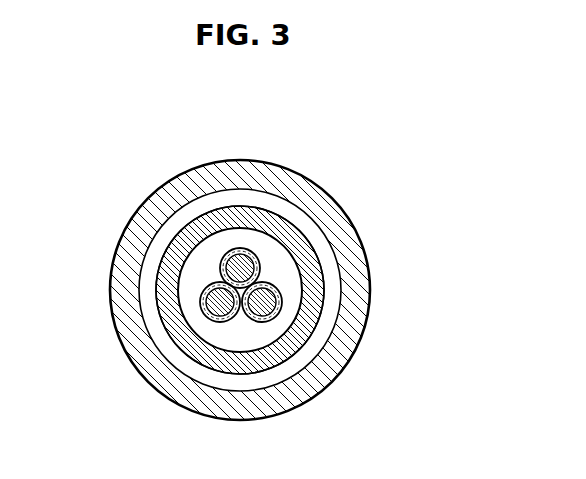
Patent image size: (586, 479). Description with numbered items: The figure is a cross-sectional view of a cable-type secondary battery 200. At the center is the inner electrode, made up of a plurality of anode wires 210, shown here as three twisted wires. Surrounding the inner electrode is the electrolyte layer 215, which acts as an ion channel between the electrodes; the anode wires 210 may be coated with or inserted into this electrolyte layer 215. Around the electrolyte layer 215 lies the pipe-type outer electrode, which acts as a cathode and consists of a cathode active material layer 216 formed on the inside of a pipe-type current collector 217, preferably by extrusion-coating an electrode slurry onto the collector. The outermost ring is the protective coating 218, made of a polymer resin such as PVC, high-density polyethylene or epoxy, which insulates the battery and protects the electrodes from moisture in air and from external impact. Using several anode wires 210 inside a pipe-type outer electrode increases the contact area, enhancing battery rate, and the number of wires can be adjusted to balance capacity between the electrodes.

The cable-type secondary battery 200 is at (240, 259).
The anode wire 210 is at (211, 260).
The electrolyte layer 215 is at (252, 231).
The cathode active material layer 216 is at (274, 218).
The pipe-type current collector 217 is at (301, 207).
The protective coating 218 is at (329, 204).